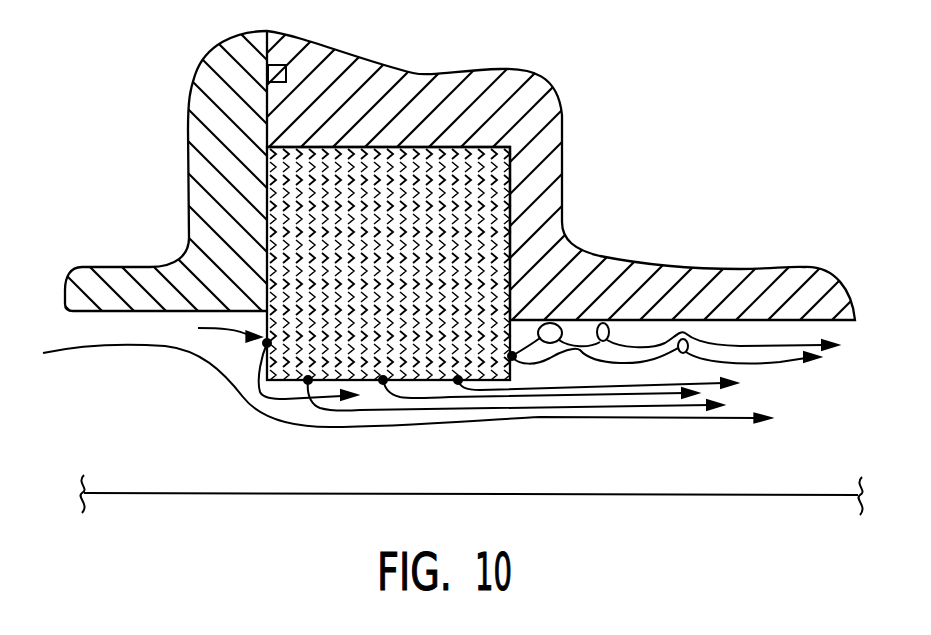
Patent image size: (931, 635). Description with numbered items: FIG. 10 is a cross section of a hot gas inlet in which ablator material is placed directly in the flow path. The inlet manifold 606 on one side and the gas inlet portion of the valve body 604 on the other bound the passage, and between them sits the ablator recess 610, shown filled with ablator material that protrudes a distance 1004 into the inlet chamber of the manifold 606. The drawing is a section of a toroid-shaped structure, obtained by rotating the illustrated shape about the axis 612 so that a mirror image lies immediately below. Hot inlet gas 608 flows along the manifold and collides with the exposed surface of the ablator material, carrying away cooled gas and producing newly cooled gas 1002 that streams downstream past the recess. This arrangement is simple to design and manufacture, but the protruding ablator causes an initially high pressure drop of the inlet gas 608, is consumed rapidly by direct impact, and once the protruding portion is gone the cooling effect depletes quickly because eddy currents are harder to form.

The valve body 604 is at (705, 277).
The inlet manifold 606 is at (149, 277).
The gas inlet 608 is at (104, 347).
The ablator recess 610 is at (457, 163).
The axis 612 is at (135, 495).
The newly cooled gas 1002 is at (492, 420).
The distance 1004 is at (206, 331).